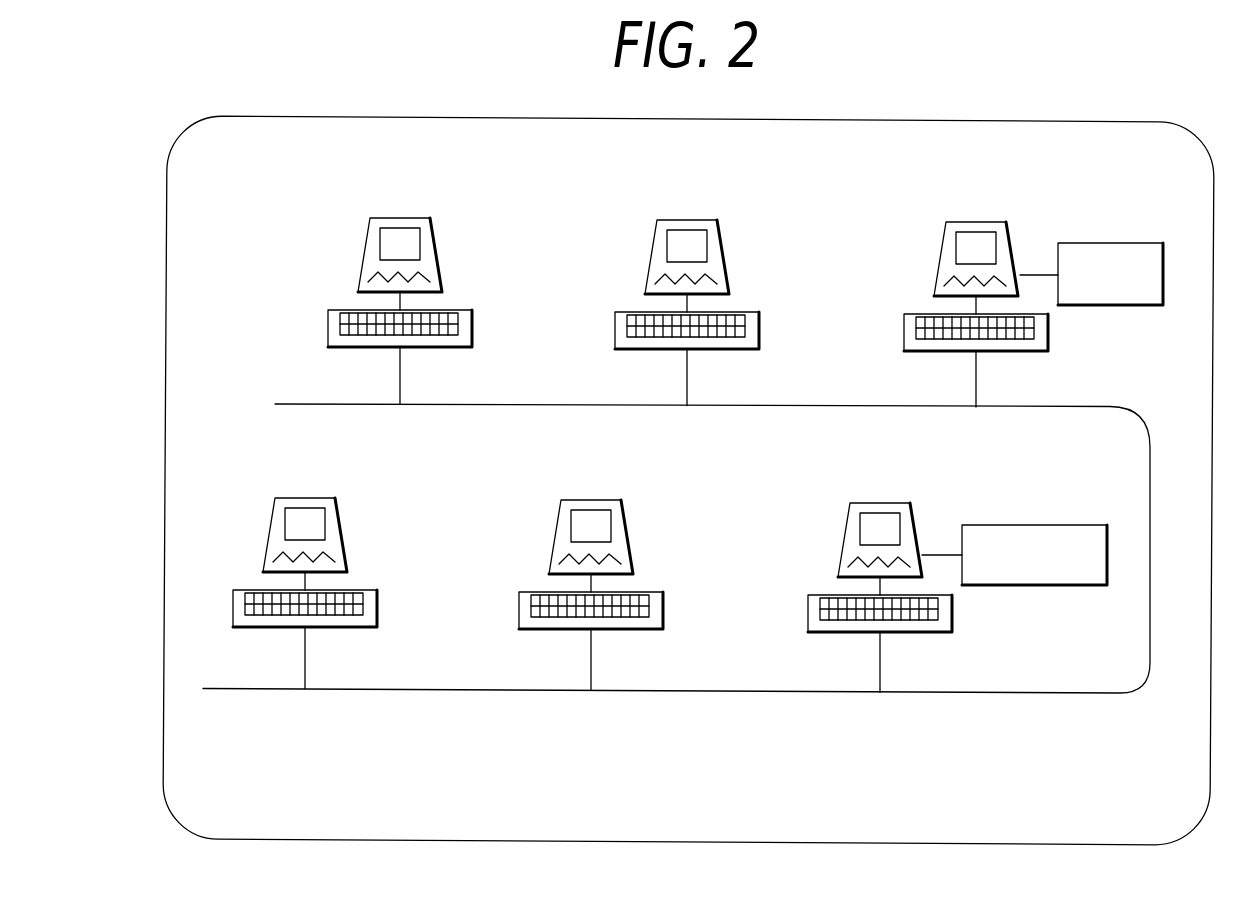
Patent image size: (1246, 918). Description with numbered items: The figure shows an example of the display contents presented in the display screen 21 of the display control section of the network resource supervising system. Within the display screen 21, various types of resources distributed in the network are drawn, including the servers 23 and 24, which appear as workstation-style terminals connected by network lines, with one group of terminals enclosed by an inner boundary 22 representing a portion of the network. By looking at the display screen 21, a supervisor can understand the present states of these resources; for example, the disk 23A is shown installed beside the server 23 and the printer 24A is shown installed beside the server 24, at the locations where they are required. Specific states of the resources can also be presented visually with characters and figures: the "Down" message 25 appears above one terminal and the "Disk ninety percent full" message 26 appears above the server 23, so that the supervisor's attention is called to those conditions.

The display screen 21 is at (1085, 120).
The sub-network bus 22 is at (647, 407).
The server 23 is at (990, 222).
The disk 23A is at (1130, 243).
The server 24 is at (890, 503).
The printer 24A is at (1065, 525).
The "Down !!!" display 25 is at (463, 160).
The "Disk 90% full !!!" display 26 is at (888, 162).